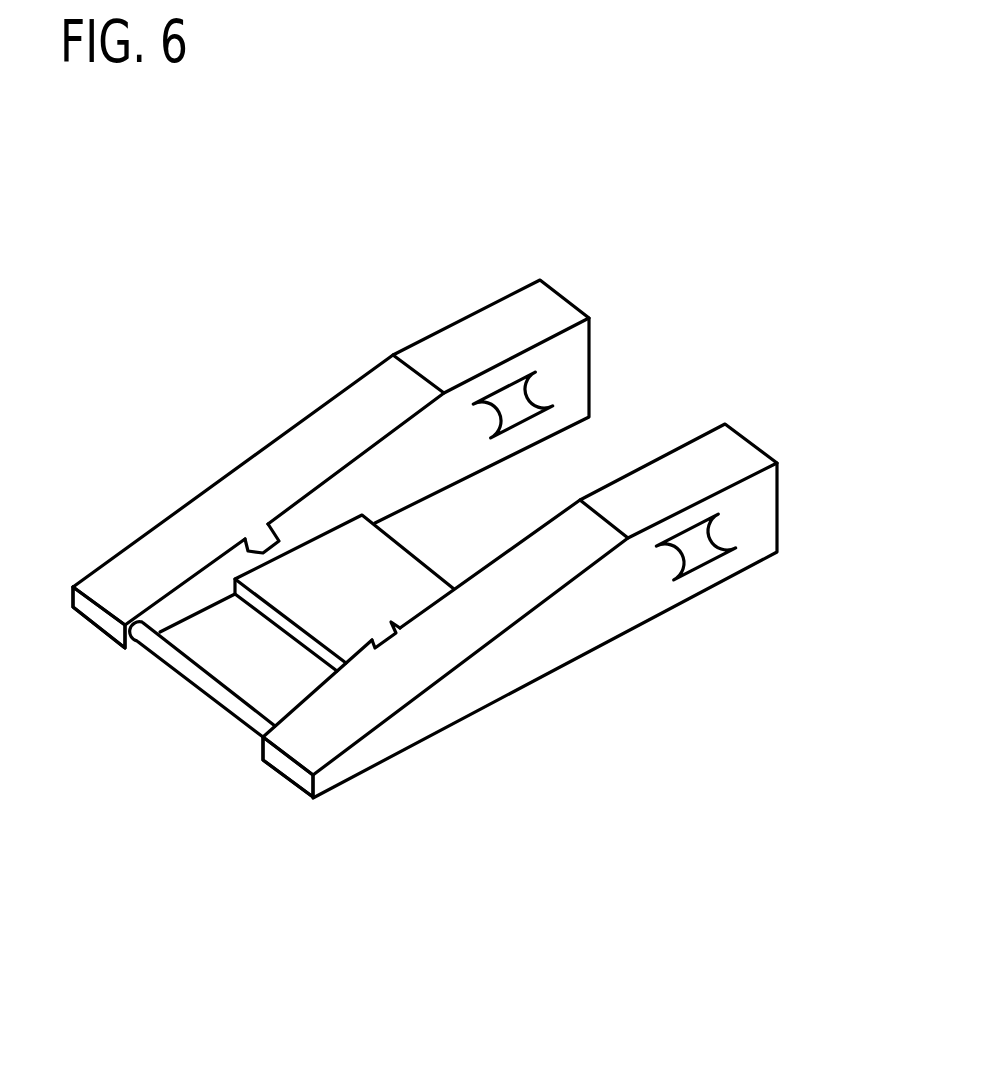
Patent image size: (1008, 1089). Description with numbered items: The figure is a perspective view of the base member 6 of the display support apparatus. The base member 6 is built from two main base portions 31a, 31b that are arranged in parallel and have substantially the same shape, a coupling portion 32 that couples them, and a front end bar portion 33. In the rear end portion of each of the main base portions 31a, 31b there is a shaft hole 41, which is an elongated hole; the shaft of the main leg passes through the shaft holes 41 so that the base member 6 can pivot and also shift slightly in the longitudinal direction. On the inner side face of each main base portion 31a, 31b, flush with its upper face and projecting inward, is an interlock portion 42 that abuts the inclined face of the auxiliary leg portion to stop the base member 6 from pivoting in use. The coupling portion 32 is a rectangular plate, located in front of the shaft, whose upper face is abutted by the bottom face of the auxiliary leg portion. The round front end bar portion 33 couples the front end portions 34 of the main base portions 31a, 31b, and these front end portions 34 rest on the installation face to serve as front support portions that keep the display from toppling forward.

The base member 6 is at (279, 214).
The main base portion 31a is at (477, 324).
The main base portion 31b is at (692, 450).
The coupling portion 32 is at (322, 565).
The front end bar portion 33 is at (190, 670).
The front end portion 34 is at (180, 612).
The shaft hole 41 is at (544, 388).
The interlock portion 42 is at (257, 540).